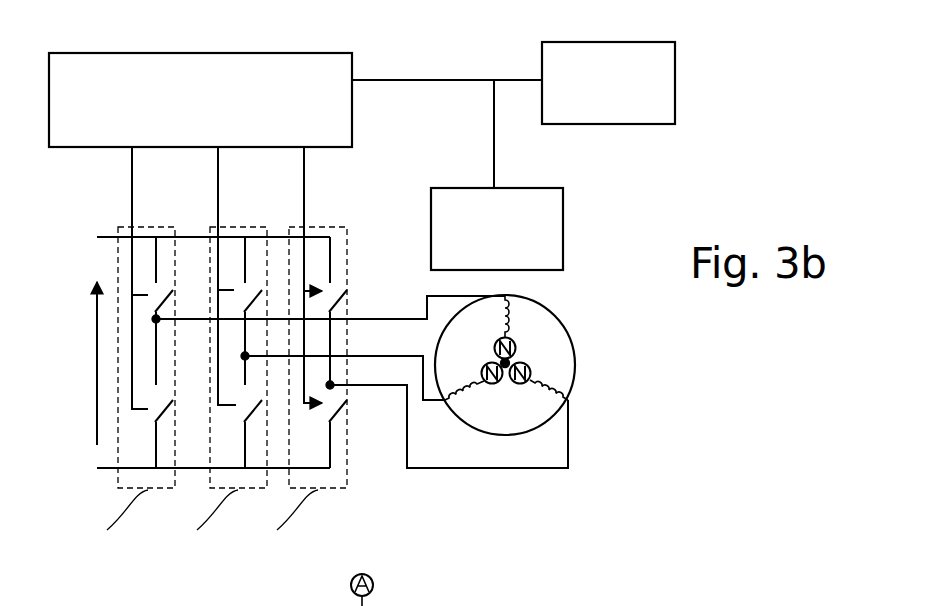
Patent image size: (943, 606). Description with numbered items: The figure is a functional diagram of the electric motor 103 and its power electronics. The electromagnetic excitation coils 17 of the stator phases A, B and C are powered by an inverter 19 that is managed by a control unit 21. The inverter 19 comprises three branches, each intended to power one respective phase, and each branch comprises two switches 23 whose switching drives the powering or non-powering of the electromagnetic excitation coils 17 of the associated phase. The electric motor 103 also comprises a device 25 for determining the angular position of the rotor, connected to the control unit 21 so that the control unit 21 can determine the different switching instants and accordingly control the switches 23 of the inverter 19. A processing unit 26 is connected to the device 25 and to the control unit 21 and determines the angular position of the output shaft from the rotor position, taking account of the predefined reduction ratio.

The electric motor 103 is at (455, 50).
The control unit 21 is at (200, 231).
The processing unit 26 is at (608, 83).
The device for determining the angular position of the rotor 25 is at (497, 229).
The inverter 19 is at (173, 514).
The switches 23 is at (237, 352).
The electromagnetic excitation coils 17 is at (508, 324).